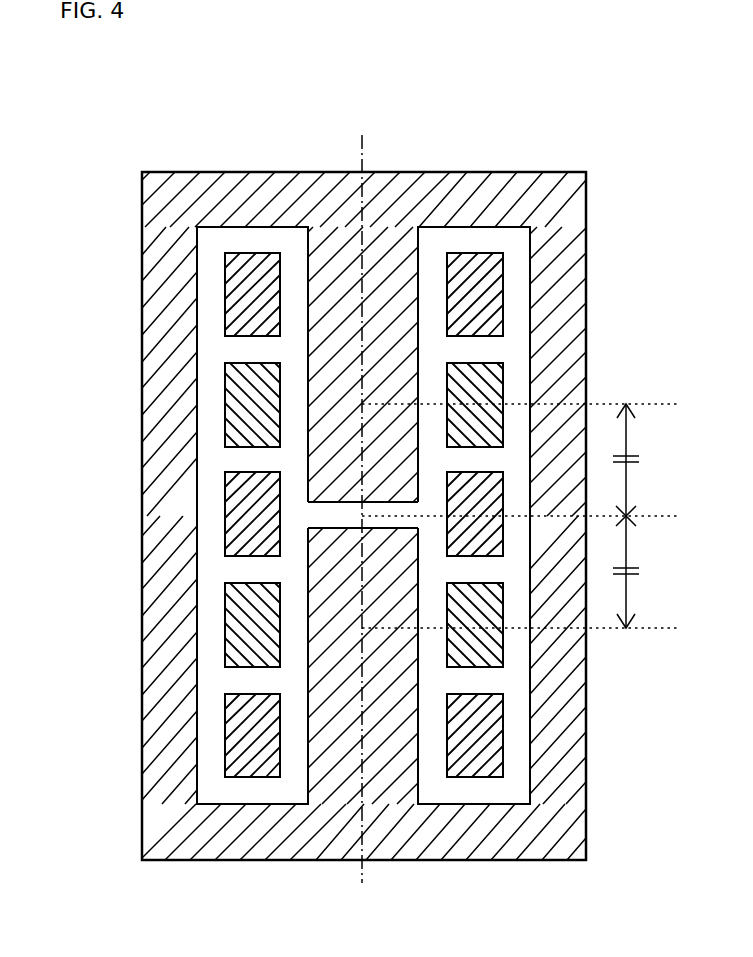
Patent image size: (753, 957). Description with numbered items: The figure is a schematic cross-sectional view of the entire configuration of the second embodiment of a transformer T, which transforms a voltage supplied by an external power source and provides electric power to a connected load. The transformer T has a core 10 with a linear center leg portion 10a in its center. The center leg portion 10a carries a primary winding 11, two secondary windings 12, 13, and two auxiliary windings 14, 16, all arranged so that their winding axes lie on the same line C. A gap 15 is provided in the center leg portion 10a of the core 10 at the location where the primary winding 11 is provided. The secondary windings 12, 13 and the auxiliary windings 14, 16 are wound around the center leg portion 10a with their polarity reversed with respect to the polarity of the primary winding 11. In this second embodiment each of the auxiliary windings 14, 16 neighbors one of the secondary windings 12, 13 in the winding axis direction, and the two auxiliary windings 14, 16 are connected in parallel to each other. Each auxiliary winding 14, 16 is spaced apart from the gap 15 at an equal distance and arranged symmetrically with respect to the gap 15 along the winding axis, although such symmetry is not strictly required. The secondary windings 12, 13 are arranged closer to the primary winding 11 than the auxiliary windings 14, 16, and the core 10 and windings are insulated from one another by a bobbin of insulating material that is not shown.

The transformer T is at (221, 113).
The core 10 is at (297, 172).
The center leg portion 10a is at (378, 248).
The primary winding 11 is at (250, 485).
The secondary winding 12 is at (250, 398).
The secondary winding 13 is at (245, 628).
The auxiliary winding 14 is at (250, 717).
The gap 15 is at (337, 515).
The auxiliary winding 16 is at (250, 296).
The line C is at (358, 530).